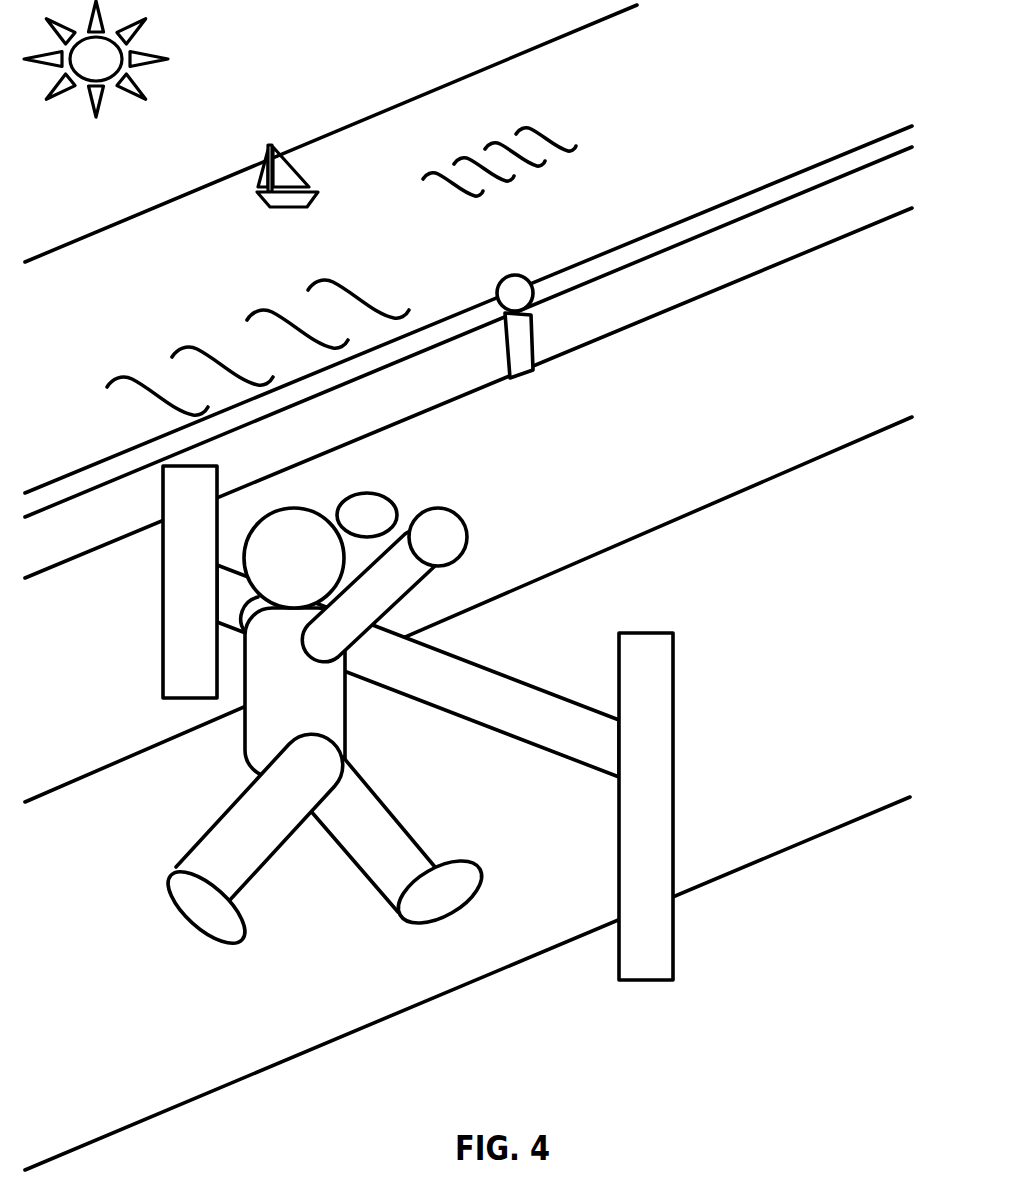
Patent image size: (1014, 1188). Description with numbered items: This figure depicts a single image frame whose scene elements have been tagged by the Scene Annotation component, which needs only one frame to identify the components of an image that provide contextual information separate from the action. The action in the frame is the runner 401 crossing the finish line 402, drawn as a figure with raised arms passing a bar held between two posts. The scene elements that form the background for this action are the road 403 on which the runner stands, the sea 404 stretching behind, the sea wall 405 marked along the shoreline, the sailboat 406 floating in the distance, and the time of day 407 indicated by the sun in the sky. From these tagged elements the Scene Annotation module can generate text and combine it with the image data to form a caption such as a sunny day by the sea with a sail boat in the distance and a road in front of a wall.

The runner 401 is at (296, 508).
The finish line 402 is at (568, 694).
The road 403 is at (769, 669).
The sea 404 is at (105, 311).
The sea wall 405 is at (514, 278).
The sailboat 406 is at (268, 145).
The time of day 407 is at (165, 60).